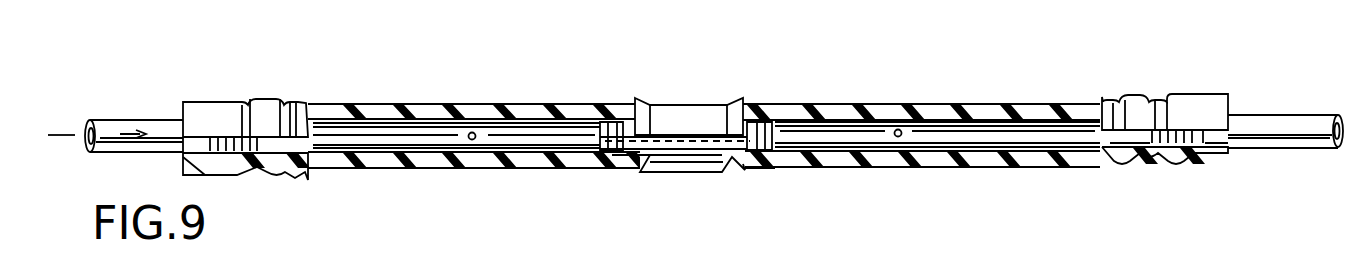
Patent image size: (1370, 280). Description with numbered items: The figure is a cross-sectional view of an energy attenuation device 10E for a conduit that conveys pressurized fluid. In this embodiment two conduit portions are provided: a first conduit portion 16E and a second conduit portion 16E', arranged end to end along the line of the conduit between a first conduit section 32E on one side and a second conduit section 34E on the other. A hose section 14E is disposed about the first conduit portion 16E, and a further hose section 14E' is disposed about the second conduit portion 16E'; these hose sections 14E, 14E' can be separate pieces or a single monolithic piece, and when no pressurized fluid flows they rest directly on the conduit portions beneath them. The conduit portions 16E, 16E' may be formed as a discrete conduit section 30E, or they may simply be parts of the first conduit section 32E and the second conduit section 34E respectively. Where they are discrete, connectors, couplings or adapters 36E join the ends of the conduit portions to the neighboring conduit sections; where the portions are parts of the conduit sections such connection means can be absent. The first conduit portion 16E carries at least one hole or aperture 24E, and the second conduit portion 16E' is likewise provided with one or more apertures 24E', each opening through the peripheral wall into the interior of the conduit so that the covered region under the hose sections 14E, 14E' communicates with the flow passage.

The energy attenuation device 10E is at (748, 88).
The hose section 14E is at (474, 105).
The hose section 14E' is at (921, 102).
The conduit portion 16E is at (456, 175).
The second conduit portion 16E' is at (937, 172).
The aperture 24E is at (497, 92).
The aperture 24E' is at (917, 178).
The discrete conduit section 30E is at (530, 151).
The first conduit section 32E is at (130, 119).
The second conduit section 34E is at (1278, 122).
The adapter 36E is at (607, 151).